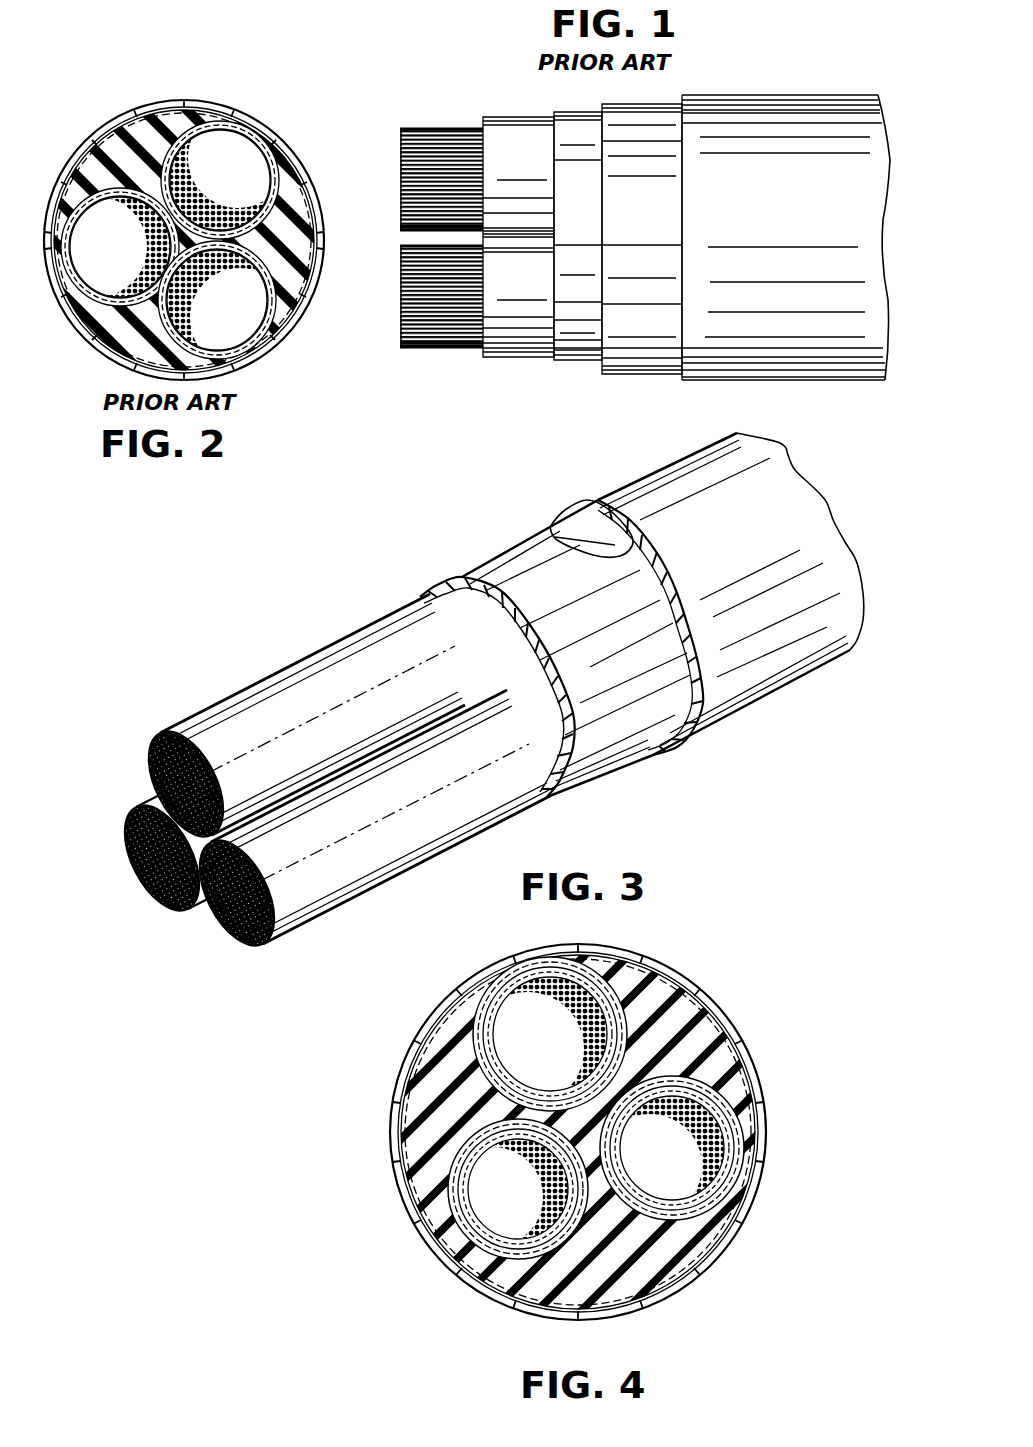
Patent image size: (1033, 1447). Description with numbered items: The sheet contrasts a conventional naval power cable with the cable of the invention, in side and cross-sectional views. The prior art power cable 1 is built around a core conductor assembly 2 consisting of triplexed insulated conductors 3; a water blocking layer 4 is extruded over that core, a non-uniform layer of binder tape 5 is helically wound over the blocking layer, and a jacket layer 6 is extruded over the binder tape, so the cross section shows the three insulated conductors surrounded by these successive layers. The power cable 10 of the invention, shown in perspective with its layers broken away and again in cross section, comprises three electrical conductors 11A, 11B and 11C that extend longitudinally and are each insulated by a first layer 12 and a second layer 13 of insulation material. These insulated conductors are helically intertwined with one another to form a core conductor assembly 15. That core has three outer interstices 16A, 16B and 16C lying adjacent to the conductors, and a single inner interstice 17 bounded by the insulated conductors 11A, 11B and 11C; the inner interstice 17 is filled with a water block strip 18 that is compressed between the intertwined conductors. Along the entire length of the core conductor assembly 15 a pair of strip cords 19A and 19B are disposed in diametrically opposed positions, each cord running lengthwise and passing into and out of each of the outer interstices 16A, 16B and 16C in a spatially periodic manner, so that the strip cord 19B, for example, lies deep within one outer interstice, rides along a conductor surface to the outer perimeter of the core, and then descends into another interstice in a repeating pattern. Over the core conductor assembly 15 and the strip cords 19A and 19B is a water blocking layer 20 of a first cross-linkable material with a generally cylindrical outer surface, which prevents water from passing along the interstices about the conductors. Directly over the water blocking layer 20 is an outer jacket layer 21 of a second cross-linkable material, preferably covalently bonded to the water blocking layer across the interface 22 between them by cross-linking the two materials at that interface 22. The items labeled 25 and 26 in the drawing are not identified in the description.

In FIG. 1, the prior art power cable 1 is at (512, 390).
In FIG. 2, the prior art power cable 1 is at (303, 117).
In FIG. 1, the core conductor assembly 2 is at (388, 326).
In FIG. 1, the triplexed insulated conductors 3 is at (438, 148).
In FIG. 2, the triplexed insulated conductors 3 is at (250, 180).
In FIG. 1, the water blocking layer 4 is at (570, 115).
In FIG. 2, the water blocking layer 4 is at (123, 157).
In FIG. 3, the water blocking layer 4 is at (640, 463).
In FIG. 1, the binder tape 5 is at (615, 365).
In FIG. 2, the binder tape 5 is at (117, 357).
In FIG. 1, the jacket layer 6 is at (700, 355).
In FIG. 2, the jacket layer 6 is at (87, 343).
In FIG. 3, the power cable 10 is at (650, 798).
In FIG. 4, the power cable 10 is at (372, 1132).
In FIG. 3, the electrical conductor 11A is at (447, 827).
In FIG. 4, the electrical conductor 11A is at (473, 1205).
In FIG. 3, the electrical conductor 11B is at (257, 713).
In FIG. 4, the electrical conductor 11B is at (636, 1030).
In FIG. 3, the electrical conductor 11C is at (333, 890).
In FIG. 4, the electrical conductor 11C is at (744, 1151).
In FIG. 3, the first layer of insulation material 12 is at (157, 763).
In FIG. 4, the first layer of insulation material 12 is at (740, 1110).
In FIG. 3, the second layer of insulation material 13 is at (160, 750).
In FIG. 4, the second layer of insulation material 13 is at (730, 1068).
In FIG. 3, the core conductor assembly 15 is at (148, 945).
In FIG. 4, the outer interstice 16A is at (670, 1293).
In FIG. 4, the outer interstice 16B is at (715, 1042).
In FIG. 4, the outer interstice 16C is at (577, 1126).
In FIG. 4, the inner interstice 17 is at (520, 1153).
In FIG. 4, the water block strip 18 is at (578, 1128).
In FIG. 3, the strip cord 19A is at (207, 913).
In FIG. 4, the strip cord 19A is at (557, 1210).
In FIG. 3, the strip cord 19B is at (307, 767).
In FIG. 4, the strip cord 19B is at (697, 1050).
In FIG. 3, the water blocking layer 20 is at (462, 575).
In FIG. 4, the water blocking layer 20 is at (488, 1107).
In FIG. 3, the outer jacket layer 21 is at (840, 652).
In FIG. 4, the outer jacket layer 21 is at (413, 1200).
In FIG. 3, the interface 22 is at (547, 530).
In FIG. 4, the interface 22 is at (465, 998).
In FIG. 3, the semiconductive layer 25 is at (150, 813).
In FIG. 4, the semiconductive layer 25 is at (610, 950).
In FIG. 4, the filler 26 is at (537, 973).